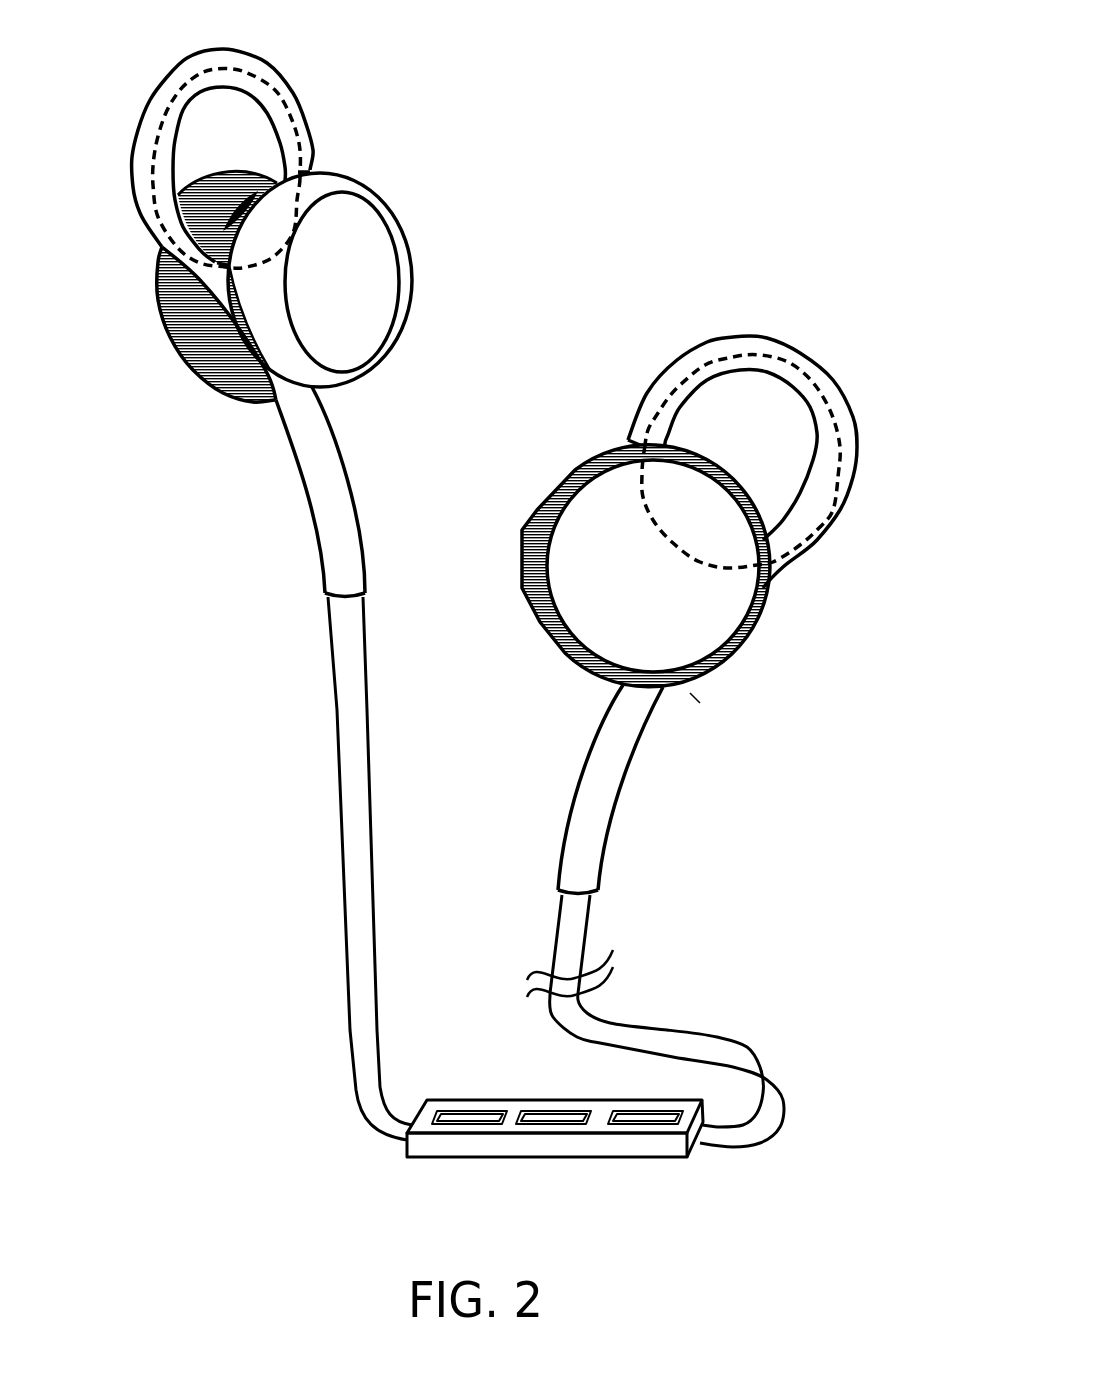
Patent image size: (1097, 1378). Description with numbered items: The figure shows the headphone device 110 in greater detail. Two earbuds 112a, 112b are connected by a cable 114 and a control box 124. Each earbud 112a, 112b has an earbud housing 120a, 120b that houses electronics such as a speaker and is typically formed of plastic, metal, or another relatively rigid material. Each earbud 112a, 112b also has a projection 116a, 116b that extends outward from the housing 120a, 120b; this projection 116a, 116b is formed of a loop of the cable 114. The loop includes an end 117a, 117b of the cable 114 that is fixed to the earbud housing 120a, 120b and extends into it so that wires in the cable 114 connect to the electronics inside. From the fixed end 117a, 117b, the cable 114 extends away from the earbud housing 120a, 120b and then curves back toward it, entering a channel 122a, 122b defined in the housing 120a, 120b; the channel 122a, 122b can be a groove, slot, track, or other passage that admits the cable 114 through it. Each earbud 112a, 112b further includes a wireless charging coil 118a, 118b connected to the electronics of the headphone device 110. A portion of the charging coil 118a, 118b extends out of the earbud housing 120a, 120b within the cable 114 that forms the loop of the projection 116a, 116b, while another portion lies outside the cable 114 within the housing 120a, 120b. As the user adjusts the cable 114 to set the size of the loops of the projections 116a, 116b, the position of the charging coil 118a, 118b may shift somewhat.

The headphone device 110 is at (820, 82).
The earbud 112a is at (428, 150).
The earbud 112b is at (901, 360).
The cable 114 is at (348, 872).
The projection 116a is at (143, 107).
The projection 116b is at (713, 340).
The end of the cable 117a is at (313, 173).
The end of the cable 117b is at (628, 438).
The wireless charging coil 118a is at (195, 70).
The wireless charging coil 118b is at (782, 360).
The earbud housing 120a is at (383, 255).
The earbud housing 120b is at (695, 608).
The channel 122a is at (268, 420).
The channel 122b is at (694, 702).
The control box 124 is at (413, 1147).